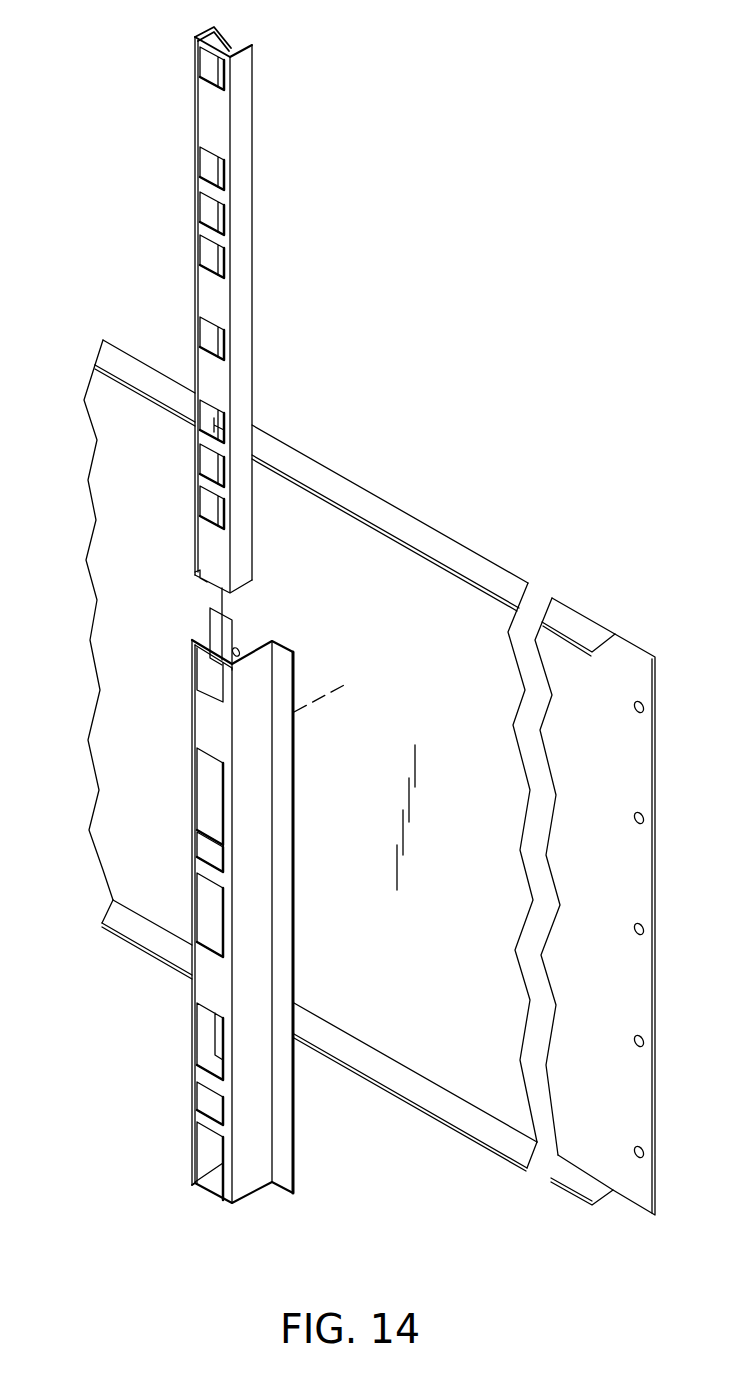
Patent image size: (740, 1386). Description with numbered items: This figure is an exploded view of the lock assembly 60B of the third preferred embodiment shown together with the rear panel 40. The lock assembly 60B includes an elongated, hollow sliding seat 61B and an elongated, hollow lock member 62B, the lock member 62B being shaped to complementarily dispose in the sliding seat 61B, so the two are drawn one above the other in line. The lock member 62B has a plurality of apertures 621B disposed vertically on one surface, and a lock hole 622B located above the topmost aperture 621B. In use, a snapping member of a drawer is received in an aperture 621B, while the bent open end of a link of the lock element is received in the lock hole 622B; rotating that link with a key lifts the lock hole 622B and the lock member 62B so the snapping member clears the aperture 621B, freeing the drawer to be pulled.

The panel 40 is at (440, 612).
The lock assembly 60B is at (246, 615).
The sliding seat 61B is at (212, 988).
The lock member 62B is at (216, 310).
The aperture 621B is at (220, 172).
The lock hole 622B is at (222, 68).